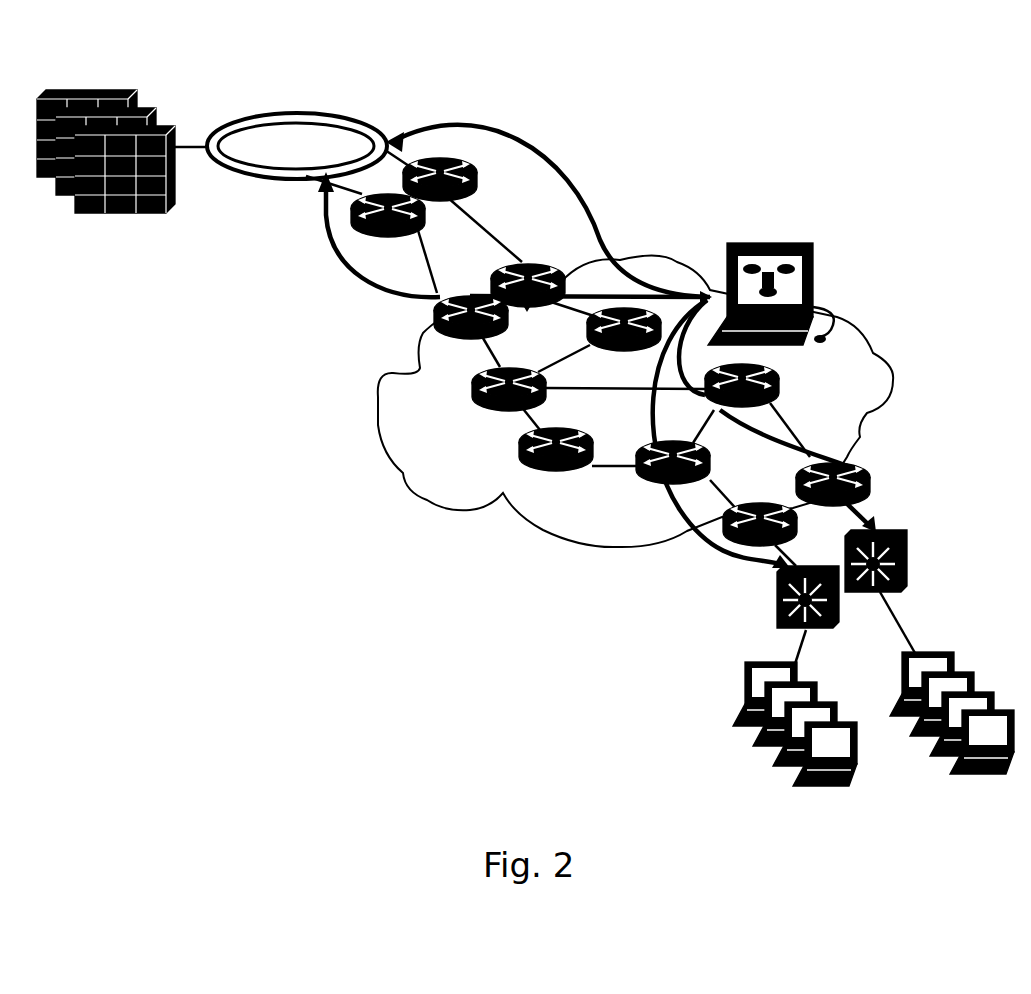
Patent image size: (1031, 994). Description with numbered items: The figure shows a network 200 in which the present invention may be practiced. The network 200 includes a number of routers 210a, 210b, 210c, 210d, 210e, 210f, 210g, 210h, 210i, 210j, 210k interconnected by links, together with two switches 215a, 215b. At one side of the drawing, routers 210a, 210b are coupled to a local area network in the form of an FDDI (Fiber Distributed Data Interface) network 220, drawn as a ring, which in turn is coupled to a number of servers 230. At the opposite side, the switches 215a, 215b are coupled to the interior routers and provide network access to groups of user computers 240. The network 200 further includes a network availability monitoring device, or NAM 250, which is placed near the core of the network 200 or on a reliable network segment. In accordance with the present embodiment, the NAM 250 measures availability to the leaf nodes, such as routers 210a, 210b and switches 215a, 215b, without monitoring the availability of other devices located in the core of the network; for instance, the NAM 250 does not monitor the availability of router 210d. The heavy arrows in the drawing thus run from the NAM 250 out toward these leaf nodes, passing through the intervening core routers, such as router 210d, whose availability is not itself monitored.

The network 200 is at (692, 196).
The router 210a is at (477, 163).
The router 210b is at (360, 228).
The router 210c is at (522, 258).
The router 210d is at (432, 312).
The router 210e is at (593, 350).
The router 210f is at (482, 405).
The router 210g is at (522, 470).
The router 210h is at (660, 482).
The router 210i is at (778, 380).
The router 210j is at (781, 500).
The router 210k is at (870, 470).
The switch 215a is at (777, 597).
The switch 215b is at (908, 556).
The FDDI network 220 is at (300, 112).
The servers 230 is at (94, 232).
The user computers 240 is at (950, 788).
The network availability monitoring device 250 is at (803, 243).